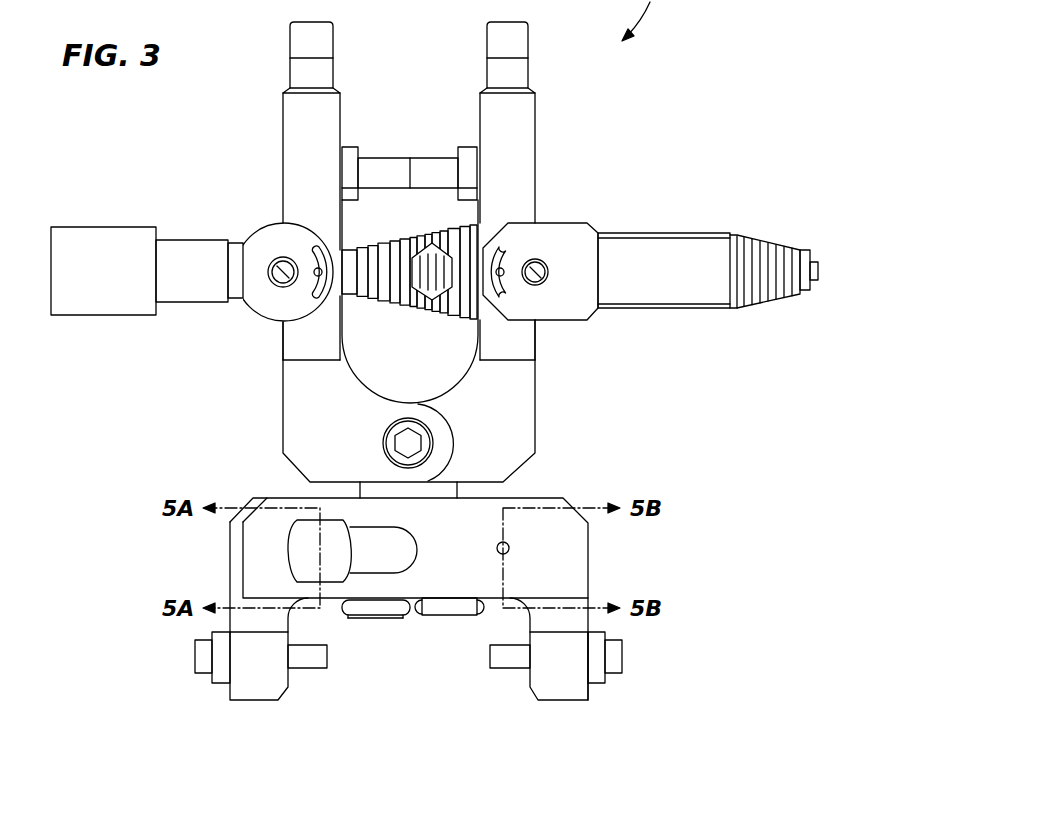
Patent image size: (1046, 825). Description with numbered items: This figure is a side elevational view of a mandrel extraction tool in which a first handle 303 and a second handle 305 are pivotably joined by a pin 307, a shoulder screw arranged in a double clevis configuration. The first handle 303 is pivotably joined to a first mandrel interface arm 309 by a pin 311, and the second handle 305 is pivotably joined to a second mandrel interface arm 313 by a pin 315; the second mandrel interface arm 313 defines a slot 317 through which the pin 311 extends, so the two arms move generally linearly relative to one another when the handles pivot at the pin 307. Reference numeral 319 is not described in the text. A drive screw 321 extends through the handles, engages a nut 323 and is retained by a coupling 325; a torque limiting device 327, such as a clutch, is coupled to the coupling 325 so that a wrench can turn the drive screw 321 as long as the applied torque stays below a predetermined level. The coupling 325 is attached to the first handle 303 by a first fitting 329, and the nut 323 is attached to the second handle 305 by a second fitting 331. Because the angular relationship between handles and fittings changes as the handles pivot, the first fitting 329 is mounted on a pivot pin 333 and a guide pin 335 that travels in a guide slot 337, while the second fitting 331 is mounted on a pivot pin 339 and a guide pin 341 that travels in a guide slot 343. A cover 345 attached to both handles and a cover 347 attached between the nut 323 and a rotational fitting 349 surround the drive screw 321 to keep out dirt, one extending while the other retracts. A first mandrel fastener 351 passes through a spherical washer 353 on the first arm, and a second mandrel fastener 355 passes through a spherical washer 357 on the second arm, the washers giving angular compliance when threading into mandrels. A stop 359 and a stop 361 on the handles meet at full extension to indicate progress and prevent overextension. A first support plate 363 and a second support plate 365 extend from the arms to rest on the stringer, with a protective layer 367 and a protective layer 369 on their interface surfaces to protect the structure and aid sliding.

The first handle 303 is at (297, 130).
The second handle 305 is at (528, 128).
The pin 307 is at (412, 447).
The first mandrel interface arm 309 is at (248, 520).
The pin 311 is at (300, 548).
The second mandrel interface arm 313 is at (580, 578).
The pin 315 is at (509, 550).
The slot 317 is at (412, 532).
The pocket 319 is at (327, 517).
The drive screw 321 is at (427, 282).
The nut 323 is at (642, 242).
The coupling 325 is at (193, 250).
The torque limiting device 327 is at (120, 303).
The first fitting 329 is at (272, 302).
The second fitting 331 is at (542, 305).
The pivot pin 333 is at (275, 260).
The guide pin 335 is at (316, 276).
The guide slot 337 is at (323, 247).
The pivot pin 339 is at (547, 278).
The guide pin 341 is at (505, 270).
The guide slot 343 is at (509, 243).
The cover 345 is at (450, 320).
The cover 347 is at (772, 300).
The rotational fitting 349 is at (807, 293).
The first mandrel fastener 351 is at (315, 660).
The spherical washer 353 is at (220, 670).
The second mandrel fastener 355 is at (513, 660).
The spherical washer 357 is at (612, 672).
The stop 359 is at (384, 163).
The stop 361 is at (448, 165).
The first support plate 363 is at (380, 615).
The second support plate 365 is at (482, 615).
The protective layer 367 is at (366, 617).
The protective layer 369 is at (467, 614).